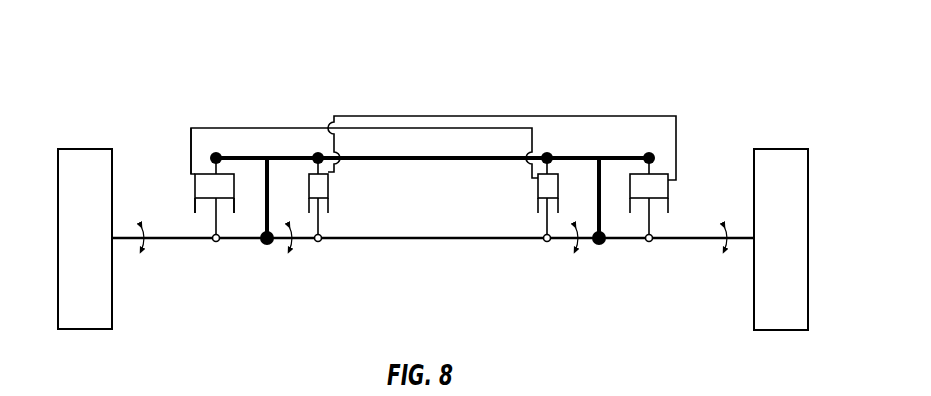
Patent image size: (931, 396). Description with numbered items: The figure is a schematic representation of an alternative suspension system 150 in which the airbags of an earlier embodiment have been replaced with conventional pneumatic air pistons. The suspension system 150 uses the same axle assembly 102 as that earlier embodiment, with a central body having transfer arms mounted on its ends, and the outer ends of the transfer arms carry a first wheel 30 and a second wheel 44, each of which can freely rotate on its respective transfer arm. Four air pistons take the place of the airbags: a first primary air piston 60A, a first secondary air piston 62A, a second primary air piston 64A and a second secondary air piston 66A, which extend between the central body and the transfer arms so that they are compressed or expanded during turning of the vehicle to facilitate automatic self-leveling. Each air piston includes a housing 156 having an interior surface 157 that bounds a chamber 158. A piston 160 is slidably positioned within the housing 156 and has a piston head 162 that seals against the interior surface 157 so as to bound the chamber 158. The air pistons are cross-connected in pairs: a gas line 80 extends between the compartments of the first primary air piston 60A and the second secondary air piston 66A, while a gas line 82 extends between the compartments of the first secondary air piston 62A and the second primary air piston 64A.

The suspension system 150 is at (519, 50).
The first wheel 30 is at (85, 329).
The second wheel 44 is at (780, 330).
The gas line 80 is at (215, 128).
The gas line 82 is at (582, 116).
The axle assembly 102 is at (418, 160).
The first primary air piston 60A is at (195, 188).
The first secondary air piston 62A is at (328, 190).
The second primary air piston 64A is at (668, 190).
The second secondary air piston 66A is at (538, 190).
The housing 156 is at (234, 192).
The interior surface 157 is at (234, 183).
The chamber 158 is at (207, 183).
The piston 160 is at (221, 217).
The piston head 162 is at (209, 198).